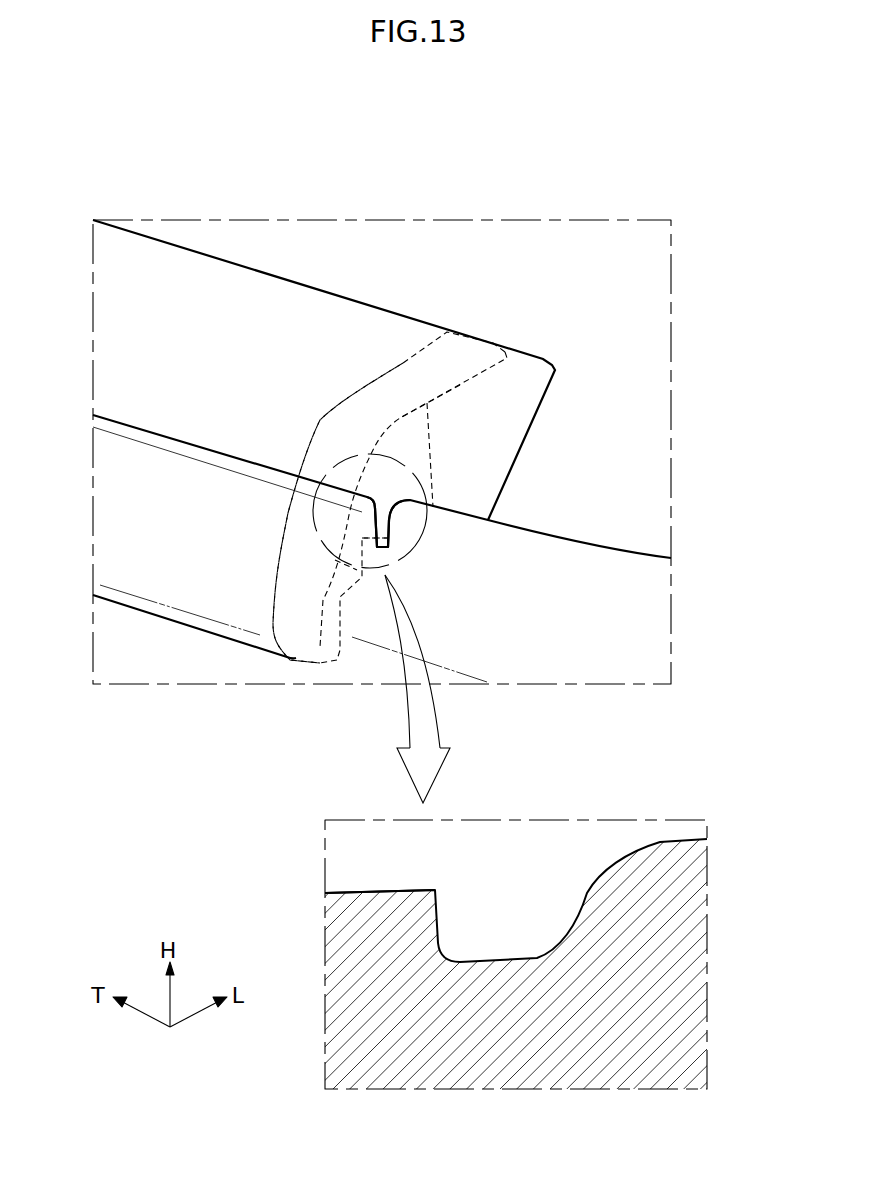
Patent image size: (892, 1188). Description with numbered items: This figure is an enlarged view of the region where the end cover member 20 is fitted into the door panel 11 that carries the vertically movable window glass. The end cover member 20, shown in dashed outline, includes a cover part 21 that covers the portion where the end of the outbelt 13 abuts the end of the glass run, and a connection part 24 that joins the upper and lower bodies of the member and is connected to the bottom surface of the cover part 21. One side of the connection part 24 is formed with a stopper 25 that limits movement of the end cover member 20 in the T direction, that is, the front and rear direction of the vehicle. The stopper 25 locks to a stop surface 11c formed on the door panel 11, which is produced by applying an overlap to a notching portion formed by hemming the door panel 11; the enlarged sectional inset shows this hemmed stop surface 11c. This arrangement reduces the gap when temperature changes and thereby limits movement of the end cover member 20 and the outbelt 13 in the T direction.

The door panel 11 is at (640, 608).
The stop surface 11c is at (440, 925).
The outbelt 13 is at (227, 283).
The end cover member 20 is at (474, 346).
The cover part 21 is at (403, 380).
The connection part 24 is at (413, 442).
The stopper 25 is at (400, 500).